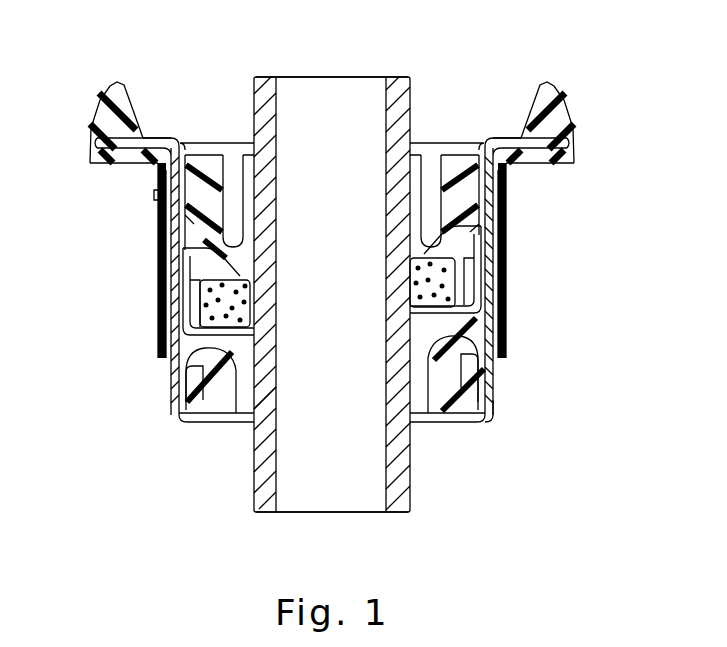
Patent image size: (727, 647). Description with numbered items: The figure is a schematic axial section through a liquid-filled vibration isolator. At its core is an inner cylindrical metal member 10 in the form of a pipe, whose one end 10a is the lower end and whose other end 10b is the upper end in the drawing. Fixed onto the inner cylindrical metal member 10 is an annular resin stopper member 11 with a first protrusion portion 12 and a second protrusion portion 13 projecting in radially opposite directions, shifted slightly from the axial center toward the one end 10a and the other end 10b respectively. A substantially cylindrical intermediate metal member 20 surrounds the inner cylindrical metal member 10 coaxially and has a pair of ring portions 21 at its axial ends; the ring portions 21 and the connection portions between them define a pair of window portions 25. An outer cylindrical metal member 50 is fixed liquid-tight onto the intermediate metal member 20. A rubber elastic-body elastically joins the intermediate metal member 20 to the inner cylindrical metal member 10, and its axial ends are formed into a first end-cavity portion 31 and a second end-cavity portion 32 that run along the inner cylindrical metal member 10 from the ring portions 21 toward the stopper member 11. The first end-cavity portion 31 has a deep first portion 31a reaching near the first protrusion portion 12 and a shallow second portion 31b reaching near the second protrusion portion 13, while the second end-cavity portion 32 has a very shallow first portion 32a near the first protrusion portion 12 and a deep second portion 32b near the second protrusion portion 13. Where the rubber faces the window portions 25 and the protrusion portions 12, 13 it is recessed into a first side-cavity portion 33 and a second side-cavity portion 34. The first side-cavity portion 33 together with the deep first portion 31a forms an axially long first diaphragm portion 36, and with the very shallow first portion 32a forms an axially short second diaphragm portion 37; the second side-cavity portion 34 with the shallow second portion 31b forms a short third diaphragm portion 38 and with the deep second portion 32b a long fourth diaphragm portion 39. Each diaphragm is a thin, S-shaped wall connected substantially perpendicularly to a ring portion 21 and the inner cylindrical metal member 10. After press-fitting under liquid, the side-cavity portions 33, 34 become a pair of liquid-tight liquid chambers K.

The inner cylindrical metal member 10 is at (405, 76).
The one end of the inner cylindrical metal member 10a is at (328, 513).
The other end of the inner cylindrical metal member 10b is at (293, 77).
The stopper member 11 is at (185, 246).
The first protrusion portion 12 is at (203, 313).
The second protrusion portion 13 is at (458, 262).
The intermediate metal member 20 is at (178, 142).
The ring portions 21 is at (482, 142).
The window portions 25 is at (197, 215).
The first end-cavity portion 31 is at (243, 176).
The deep first portion 31a is at (240, 171).
The shallow second portion 31b is at (447, 170).
The second end-cavity portion 32 is at (236, 398).
The very shallow first portion 32a is at (203, 422).
The deep second portion 32b is at (437, 422).
The first side-cavity portion 33 is at (205, 228).
The second side-cavity portion 34 is at (450, 238).
The first diaphragm portion 36 is at (162, 198).
The second diaphragm portion 37 is at (205, 343).
The third diaphragm portion 38 is at (470, 238).
The fourth diaphragm portion 39 is at (472, 362).
The outer cylindrical metal member 50 is at (495, 395).
The liquid chambers K is at (329, 296).